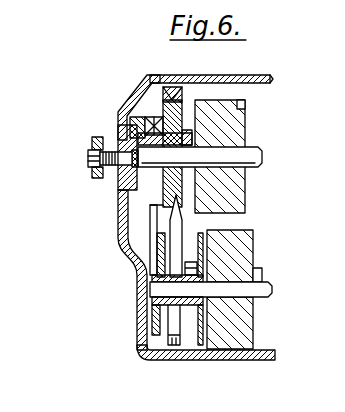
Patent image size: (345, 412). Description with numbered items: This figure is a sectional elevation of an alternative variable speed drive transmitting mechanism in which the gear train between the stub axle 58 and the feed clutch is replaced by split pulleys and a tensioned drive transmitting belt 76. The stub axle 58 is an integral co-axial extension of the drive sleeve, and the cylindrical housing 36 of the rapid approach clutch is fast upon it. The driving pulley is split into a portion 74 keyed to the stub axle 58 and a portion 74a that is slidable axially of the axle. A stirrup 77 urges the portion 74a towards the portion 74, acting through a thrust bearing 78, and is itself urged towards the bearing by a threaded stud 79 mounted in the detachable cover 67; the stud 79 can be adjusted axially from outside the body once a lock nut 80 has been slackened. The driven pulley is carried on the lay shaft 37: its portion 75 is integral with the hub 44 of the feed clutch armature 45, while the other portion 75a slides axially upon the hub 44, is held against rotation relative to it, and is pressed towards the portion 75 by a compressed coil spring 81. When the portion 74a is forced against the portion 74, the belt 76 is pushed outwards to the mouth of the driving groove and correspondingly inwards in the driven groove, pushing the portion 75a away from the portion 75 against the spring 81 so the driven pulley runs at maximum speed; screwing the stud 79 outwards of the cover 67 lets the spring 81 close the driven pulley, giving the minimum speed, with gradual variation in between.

The cylindrical housing 36 is at (213, 137).
The lay shaft 37 is at (266, 284).
The hub 44 is at (157, 303).
The armature 45 is at (215, 252).
The stub axle 58 is at (248, 157).
The detachable cover 67 is at (180, 361).
The driving pulley portion 74 is at (215, 77).
The driving pulley portion 74a is at (167, 86).
The driven pulley portion 75 is at (130, 253).
The driven pulley portion 75a is at (180, 238).
The drive transmitting belt 76 is at (185, 98).
The stirrup 77 is at (137, 100).
The thrust bearing 78 is at (134, 201).
The threaded stud 79 is at (87, 150).
The lock nut 80 is at (97, 177).
The compressed coil spring 81 is at (177, 327).